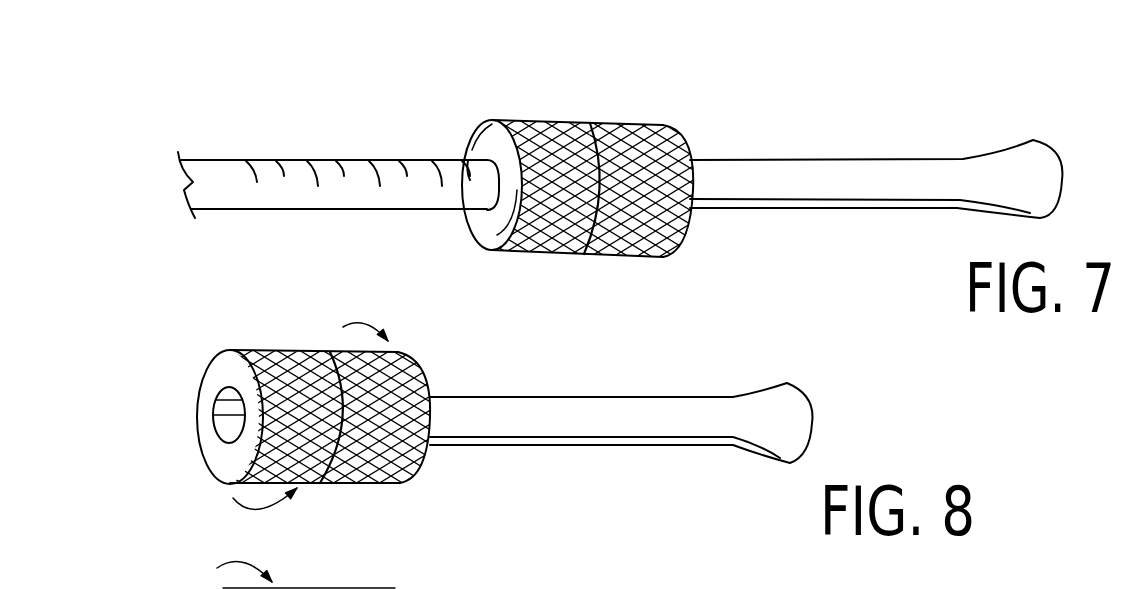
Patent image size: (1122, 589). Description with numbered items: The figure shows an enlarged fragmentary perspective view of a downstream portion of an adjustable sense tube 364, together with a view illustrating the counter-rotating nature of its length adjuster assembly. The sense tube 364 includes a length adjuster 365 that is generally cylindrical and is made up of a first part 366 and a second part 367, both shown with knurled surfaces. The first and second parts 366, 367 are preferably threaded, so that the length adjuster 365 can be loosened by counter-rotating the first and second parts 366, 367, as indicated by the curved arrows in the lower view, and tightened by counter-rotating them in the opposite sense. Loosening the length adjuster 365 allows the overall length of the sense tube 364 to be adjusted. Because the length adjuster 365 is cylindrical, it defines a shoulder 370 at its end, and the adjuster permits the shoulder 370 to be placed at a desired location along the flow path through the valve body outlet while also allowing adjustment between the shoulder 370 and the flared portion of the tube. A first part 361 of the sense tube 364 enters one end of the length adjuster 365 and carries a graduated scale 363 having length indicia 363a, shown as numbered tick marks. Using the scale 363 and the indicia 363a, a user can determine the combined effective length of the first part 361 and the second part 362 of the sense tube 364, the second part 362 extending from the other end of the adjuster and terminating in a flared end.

In FIG. 7, the first part 361 is at (324, 159).
In FIG. 7, the second part 362 is at (765, 159).
In FIG. 8, the second part 362 is at (556, 404).
In FIG. 7, the graduated scale 363 is at (362, 155).
In FIG. 7, the length indicia 363a is at (258, 184).
In FIG. 7, the sense tube 364 is at (624, 264).
In FIG. 8, the sense tube 364 is at (510, 462).
In FIG. 7, the length adjuster 365 is at (600, 123).
In FIG. 8, the length adjuster 365 is at (347, 486).
In FIG. 7, the first part 366 is at (527, 119).
In FIG. 8, the first part 366 is at (263, 351).
In FIG. 7, the second part 367 is at (641, 124).
In FIG. 8, the second part 367 is at (396, 352).
In FIG. 7, the shoulder 370 is at (494, 252).